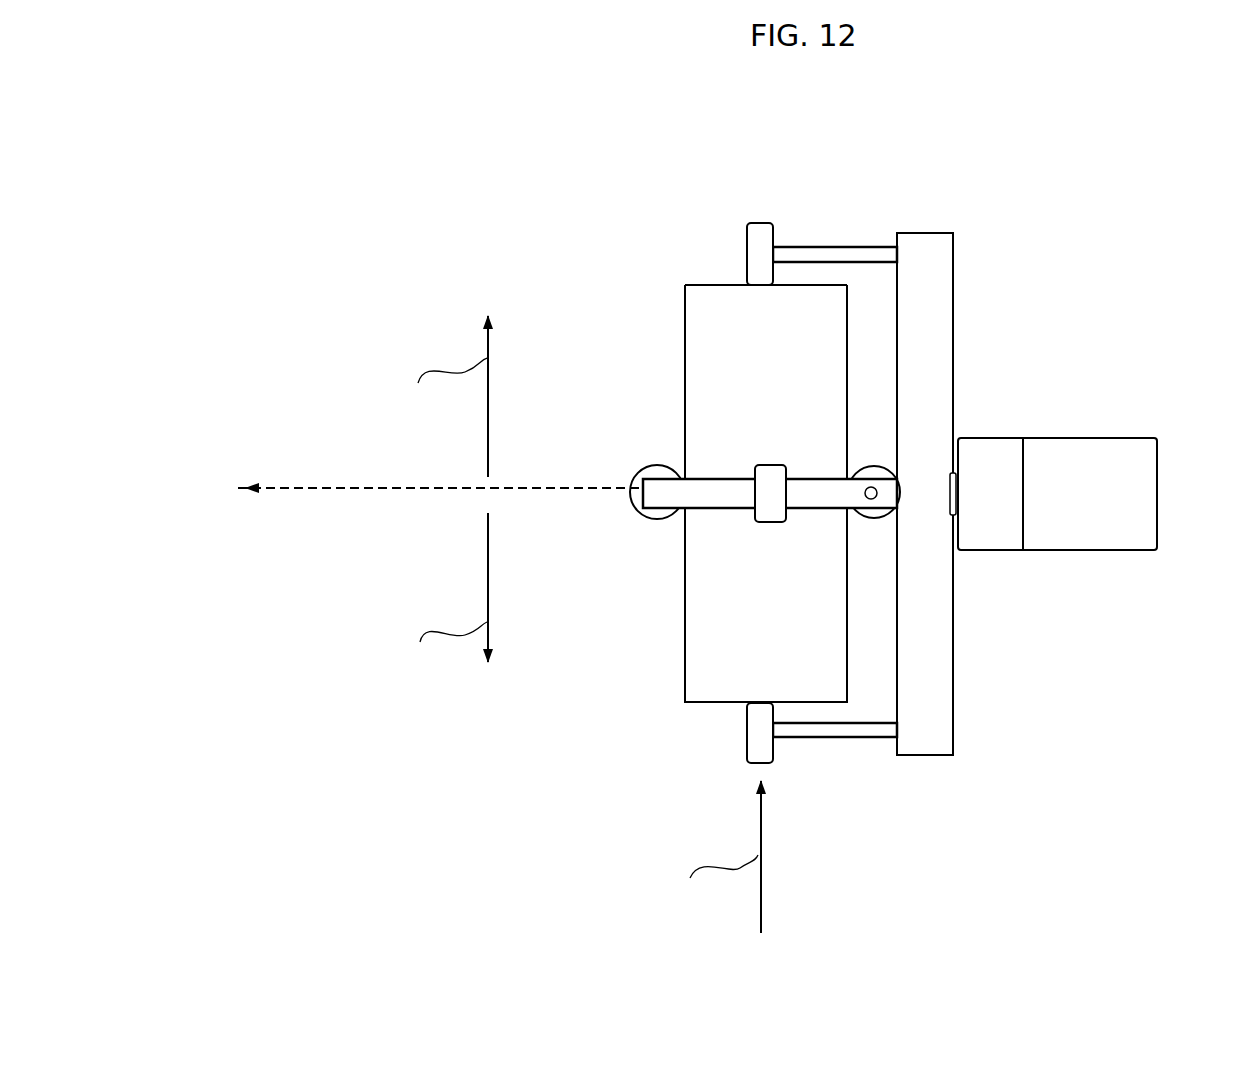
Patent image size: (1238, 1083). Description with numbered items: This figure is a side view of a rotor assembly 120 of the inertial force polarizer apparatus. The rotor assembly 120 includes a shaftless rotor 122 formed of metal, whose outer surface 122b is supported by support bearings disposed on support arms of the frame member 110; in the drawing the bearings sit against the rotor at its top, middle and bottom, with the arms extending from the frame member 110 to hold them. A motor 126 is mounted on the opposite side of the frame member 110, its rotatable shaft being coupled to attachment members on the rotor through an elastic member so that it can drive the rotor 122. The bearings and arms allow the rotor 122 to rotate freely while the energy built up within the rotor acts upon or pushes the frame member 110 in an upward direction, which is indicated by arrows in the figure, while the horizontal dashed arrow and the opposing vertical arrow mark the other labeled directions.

The frame member 110 is at (953, 305).
The rotor assembly 120 is at (325, 174).
The shaftless rotor 122 is at (689, 468).
The outer surface 122b is at (716, 340).
The motor 126 is at (1155, 437).